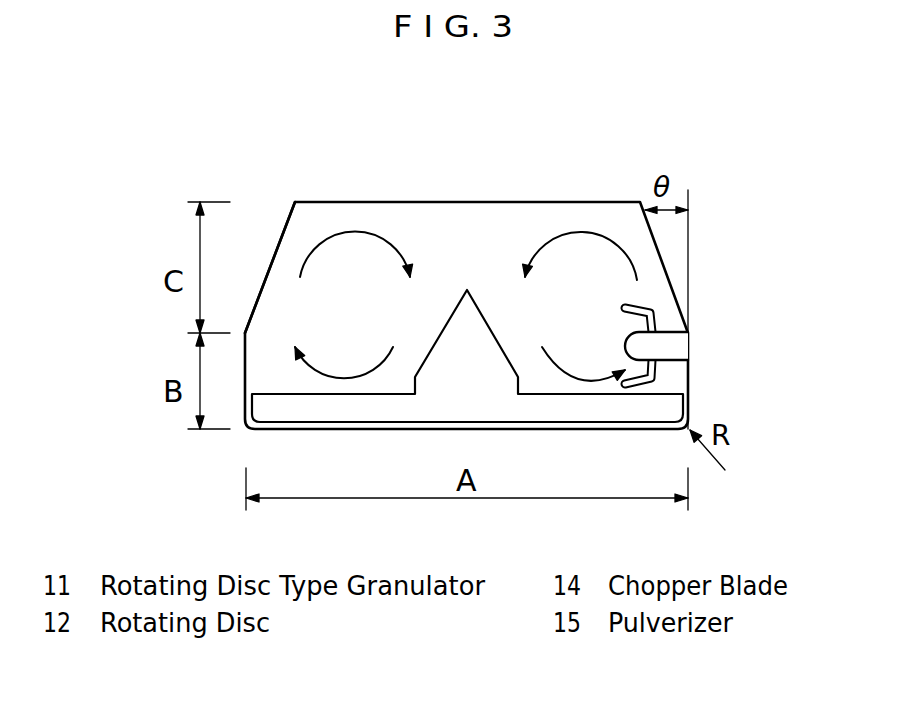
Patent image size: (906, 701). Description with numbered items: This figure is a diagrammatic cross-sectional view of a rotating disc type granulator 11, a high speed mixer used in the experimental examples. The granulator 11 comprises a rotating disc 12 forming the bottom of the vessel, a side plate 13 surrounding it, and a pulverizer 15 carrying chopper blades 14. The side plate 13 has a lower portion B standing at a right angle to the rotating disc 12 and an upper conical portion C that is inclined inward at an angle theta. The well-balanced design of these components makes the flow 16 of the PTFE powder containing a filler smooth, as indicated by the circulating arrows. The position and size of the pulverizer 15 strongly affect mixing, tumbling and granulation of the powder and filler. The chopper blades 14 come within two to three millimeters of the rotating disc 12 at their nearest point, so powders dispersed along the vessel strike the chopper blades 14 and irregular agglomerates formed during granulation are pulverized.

The rotating disc type granulator 11 is at (582, 157).
The rotating disc 12 is at (282, 409).
The side plate 13 is at (277, 243).
The chopper blades 14 is at (655, 377).
The pulverizer 15 is at (672, 347).
The flow 16 is at (360, 232).